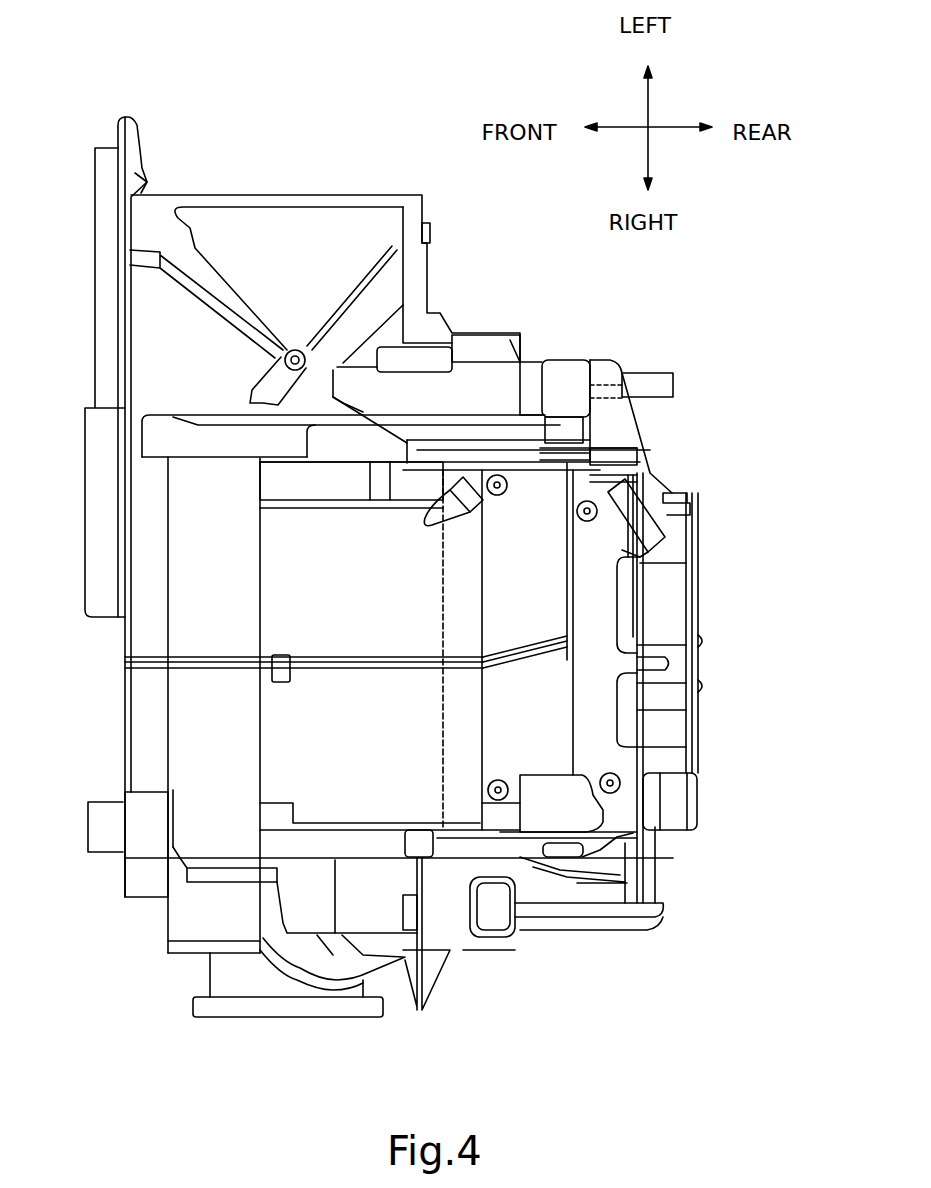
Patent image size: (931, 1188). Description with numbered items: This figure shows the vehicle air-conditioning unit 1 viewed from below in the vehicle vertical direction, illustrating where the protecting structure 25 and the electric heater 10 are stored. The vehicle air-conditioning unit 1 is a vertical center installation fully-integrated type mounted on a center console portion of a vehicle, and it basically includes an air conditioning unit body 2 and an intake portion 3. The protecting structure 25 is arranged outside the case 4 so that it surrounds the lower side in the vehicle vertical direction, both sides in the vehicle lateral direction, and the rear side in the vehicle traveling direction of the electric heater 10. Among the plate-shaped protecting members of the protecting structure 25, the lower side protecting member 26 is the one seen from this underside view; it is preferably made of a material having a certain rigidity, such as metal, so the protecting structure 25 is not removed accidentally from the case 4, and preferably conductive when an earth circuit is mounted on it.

The vehicle air-conditioning unit 1 is at (587, 357).
The air conditioning unit body 2 is at (342, 867).
The intake portion 3 is at (293, 195).
The case 4 is at (299, 608).
The electric heater 10 is at (670, 496).
The protecting structure 25 is at (543, 722).
The lower side protecting member 26 is at (598, 603).